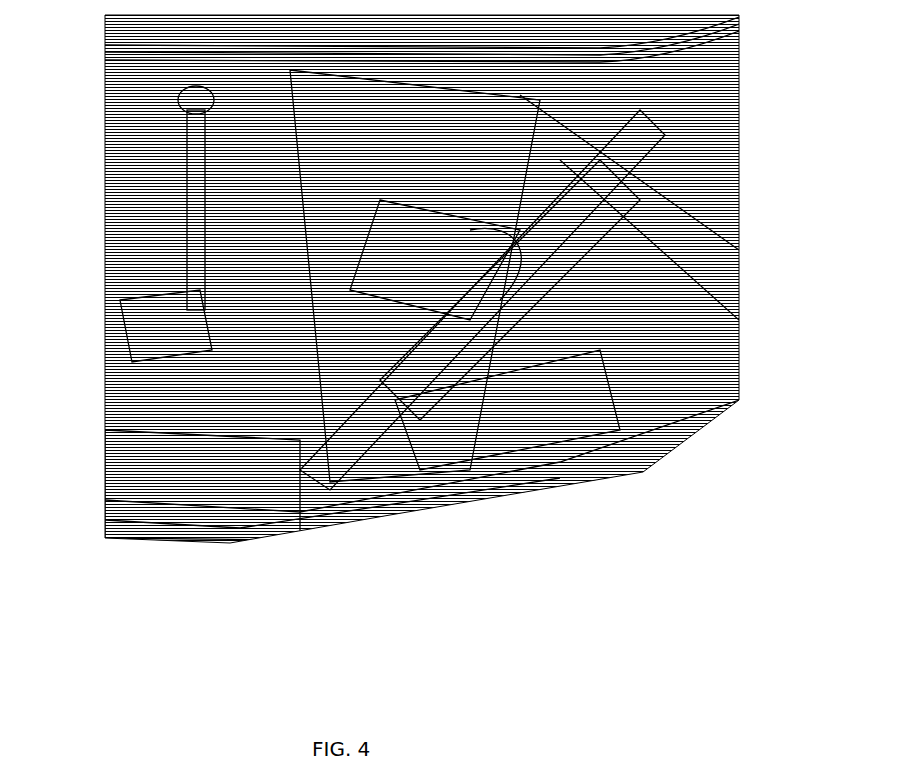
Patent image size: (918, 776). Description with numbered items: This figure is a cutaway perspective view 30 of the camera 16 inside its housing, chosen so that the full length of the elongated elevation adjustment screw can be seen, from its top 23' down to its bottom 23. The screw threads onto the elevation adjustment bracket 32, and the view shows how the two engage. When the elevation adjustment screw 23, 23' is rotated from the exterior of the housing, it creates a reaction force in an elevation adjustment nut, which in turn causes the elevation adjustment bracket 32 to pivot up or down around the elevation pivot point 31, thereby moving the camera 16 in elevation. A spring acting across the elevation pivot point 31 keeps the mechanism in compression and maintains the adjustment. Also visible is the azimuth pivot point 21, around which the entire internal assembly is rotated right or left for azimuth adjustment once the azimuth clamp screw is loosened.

The cutaway perspective view 30 is at (757, 103).
The top of elevation adjustment screw 23' is at (119, 198).
The elevation adjustment bracket 32 is at (180, 323).
The camera 16 is at (407, 285).
The elevation pivot point 31 is at (407, 285).
The azimuth pivot point 21 is at (393, 372).
The elevation adjustment screw 23 is at (167, 501).